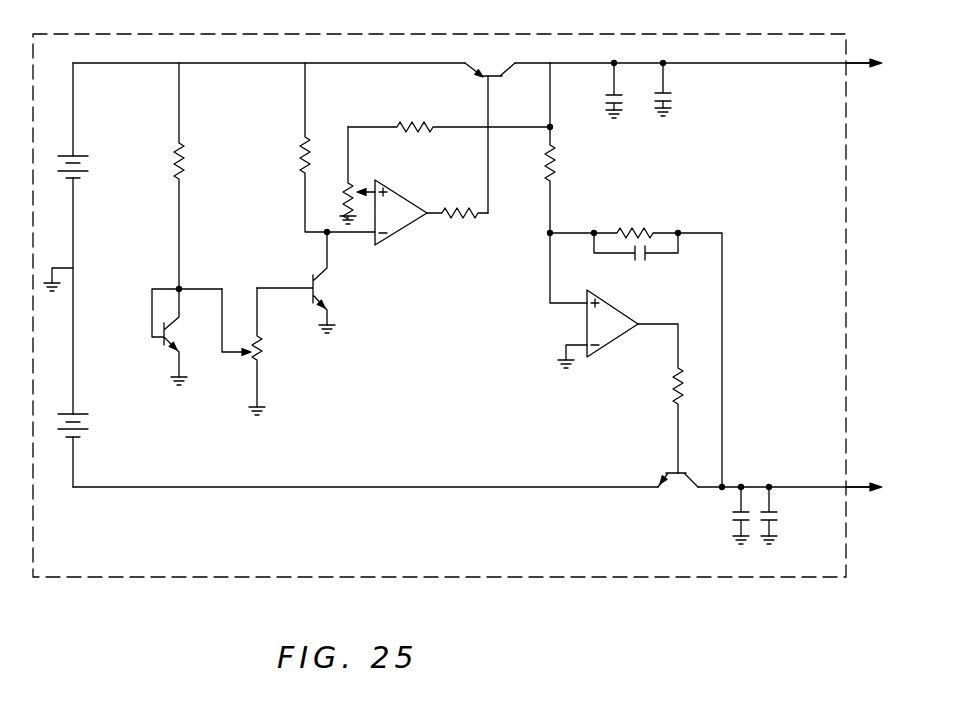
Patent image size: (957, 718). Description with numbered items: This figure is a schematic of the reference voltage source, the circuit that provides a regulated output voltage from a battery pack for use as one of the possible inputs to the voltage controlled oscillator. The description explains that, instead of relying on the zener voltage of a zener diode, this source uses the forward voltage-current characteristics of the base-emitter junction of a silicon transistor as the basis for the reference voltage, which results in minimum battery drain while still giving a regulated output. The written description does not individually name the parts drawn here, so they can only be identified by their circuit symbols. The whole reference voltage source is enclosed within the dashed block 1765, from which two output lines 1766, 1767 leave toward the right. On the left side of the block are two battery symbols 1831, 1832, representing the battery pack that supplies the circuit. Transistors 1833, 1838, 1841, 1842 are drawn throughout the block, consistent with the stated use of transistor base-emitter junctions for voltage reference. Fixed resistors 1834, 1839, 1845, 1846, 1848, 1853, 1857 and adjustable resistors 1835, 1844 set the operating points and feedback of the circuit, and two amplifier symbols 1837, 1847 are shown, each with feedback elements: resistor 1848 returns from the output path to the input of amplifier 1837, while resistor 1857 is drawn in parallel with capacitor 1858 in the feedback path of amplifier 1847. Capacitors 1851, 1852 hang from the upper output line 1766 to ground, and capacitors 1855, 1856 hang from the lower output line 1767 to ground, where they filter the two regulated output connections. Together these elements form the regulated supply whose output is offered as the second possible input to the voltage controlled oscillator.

The circuit block 1765 is at (782, 578).
The output line 1766 is at (862, 68).
The output line 1767 is at (857, 489).
The battery 1831 is at (88, 166).
The battery 1832 is at (117, 434).
The transistor 1833 is at (163, 347).
The resistor 1834 is at (183, 157).
The potentiometer 1835 is at (262, 350).
The operational amplifier 1837 is at (400, 193).
The transistor 1838 is at (312, 280).
The resistor 1839 is at (302, 147).
The transistor 1841 is at (493, 78).
The transistor 1842 is at (662, 472).
The potentiometer 1844 is at (350, 183).
The resistor 1845 is at (463, 217).
The resistor 1846 is at (553, 165).
The operational amplifier 1847 is at (608, 345).
The resistor 1848 is at (413, 125).
The capacitor 1851 is at (608, 102).
The capacitor 1852 is at (667, 98).
The resistor 1853 is at (675, 403).
The capacitor 1855 is at (737, 523).
The capacitor 1856 is at (773, 517).
The resistor 1857 is at (640, 230).
The capacitor 1858 is at (647, 258).